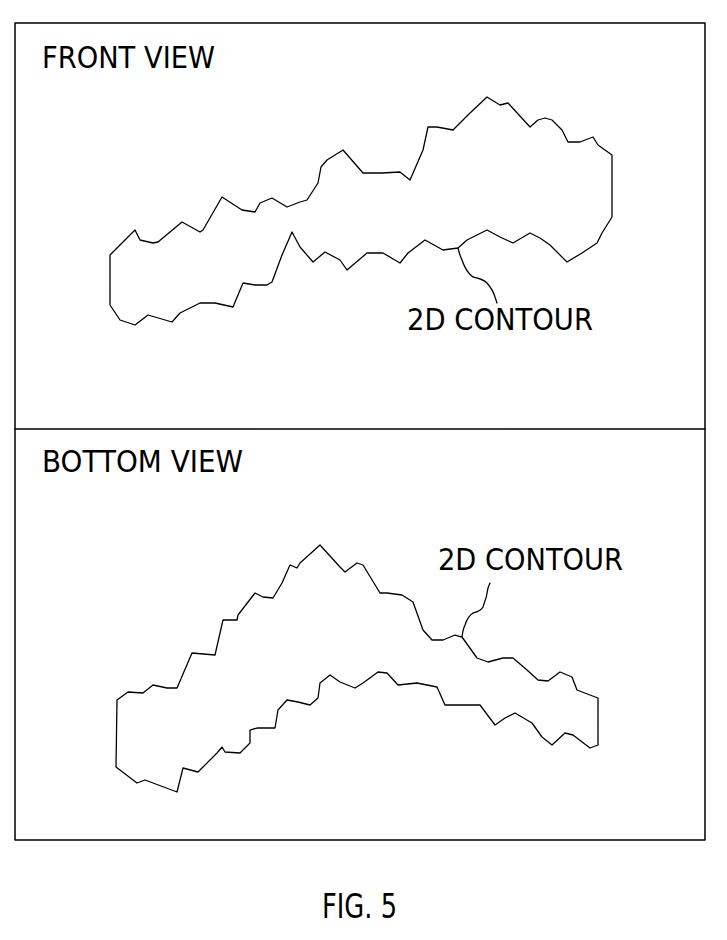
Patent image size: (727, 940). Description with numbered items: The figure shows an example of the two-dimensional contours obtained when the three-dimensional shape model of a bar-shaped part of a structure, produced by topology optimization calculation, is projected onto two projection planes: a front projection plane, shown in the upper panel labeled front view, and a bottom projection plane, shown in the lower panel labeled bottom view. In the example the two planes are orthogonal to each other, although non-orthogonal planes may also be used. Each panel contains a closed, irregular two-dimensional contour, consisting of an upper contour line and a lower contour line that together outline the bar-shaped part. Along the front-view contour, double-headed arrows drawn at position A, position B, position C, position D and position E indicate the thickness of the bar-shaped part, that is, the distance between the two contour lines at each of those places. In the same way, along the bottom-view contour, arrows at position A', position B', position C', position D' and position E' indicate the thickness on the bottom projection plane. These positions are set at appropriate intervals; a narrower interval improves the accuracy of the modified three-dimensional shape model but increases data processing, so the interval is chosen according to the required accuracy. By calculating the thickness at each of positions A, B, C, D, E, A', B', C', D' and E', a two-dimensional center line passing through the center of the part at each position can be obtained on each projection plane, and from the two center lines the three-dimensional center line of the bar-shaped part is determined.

The position A is at (135, 294).
The position B is at (258, 264).
The position C is at (410, 234).
The position D is at (532, 199).
The position E is at (601, 211).
The position A' is at (146, 756).
The position B' is at (268, 680).
The position C' is at (390, 654).
The position D' is at (507, 709).
The position E' is at (595, 742).